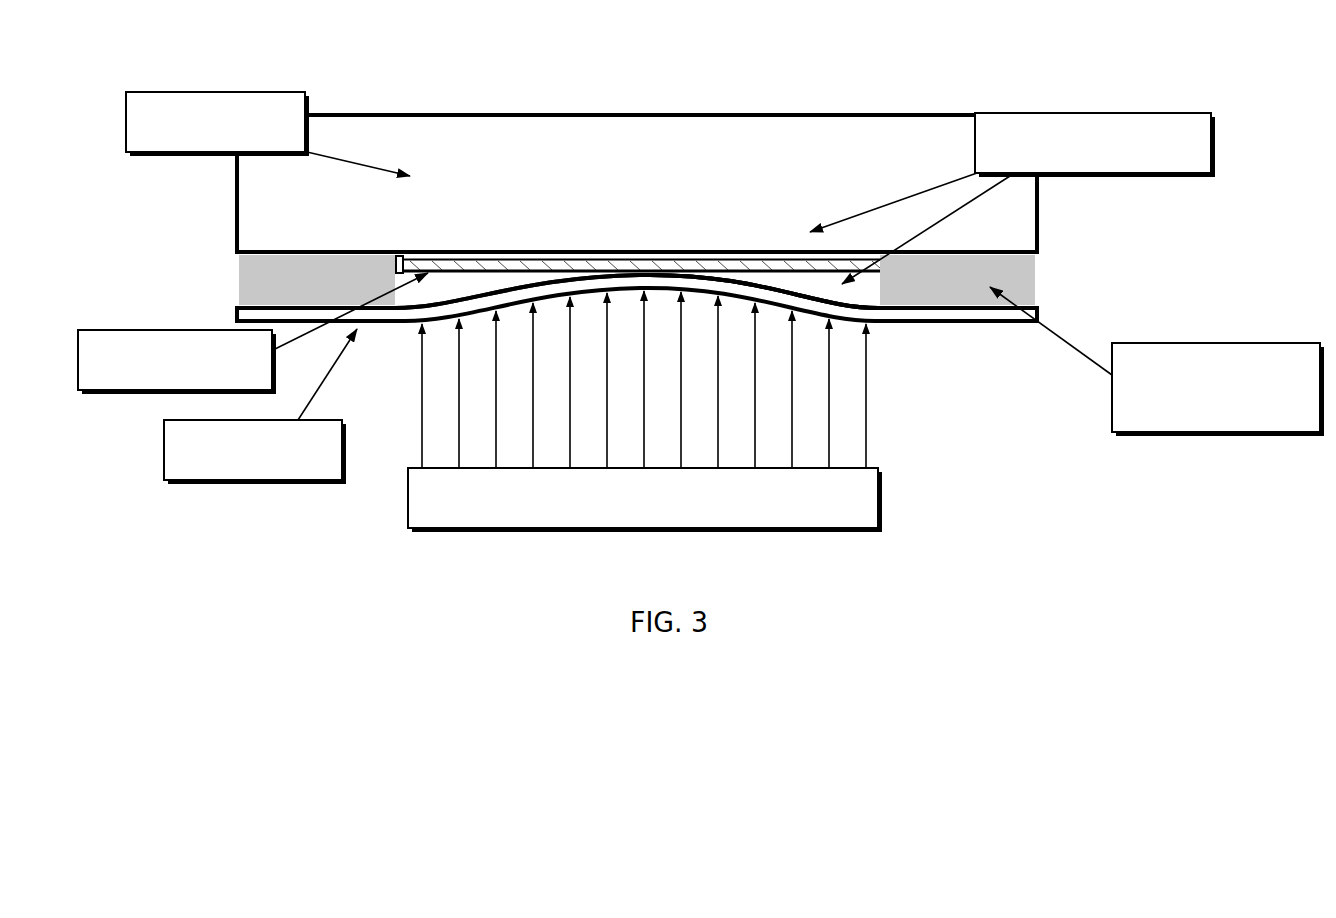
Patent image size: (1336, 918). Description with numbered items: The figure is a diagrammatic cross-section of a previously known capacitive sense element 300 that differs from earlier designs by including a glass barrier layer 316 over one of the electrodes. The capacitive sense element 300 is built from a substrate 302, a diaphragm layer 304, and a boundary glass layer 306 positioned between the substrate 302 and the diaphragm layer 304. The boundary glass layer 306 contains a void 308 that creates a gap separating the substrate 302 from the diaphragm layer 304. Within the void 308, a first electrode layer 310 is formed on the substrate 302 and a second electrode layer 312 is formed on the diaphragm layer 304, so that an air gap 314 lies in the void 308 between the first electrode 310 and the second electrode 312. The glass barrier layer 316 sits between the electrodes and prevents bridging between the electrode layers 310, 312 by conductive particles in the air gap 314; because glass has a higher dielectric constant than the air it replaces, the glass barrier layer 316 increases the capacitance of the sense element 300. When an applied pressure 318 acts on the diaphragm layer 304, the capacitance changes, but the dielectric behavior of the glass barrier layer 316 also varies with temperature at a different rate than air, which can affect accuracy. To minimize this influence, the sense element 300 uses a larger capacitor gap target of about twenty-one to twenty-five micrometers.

The capacitive sense element 300 is at (701, 270).
The substrate 302 is at (411, 129).
The diaphragm layer 304 is at (408, 317).
The boundary glass layer 306 is at (1036, 283).
The void 308 is at (769, 282).
The first electrode layer 310 is at (446, 259).
The second electrode layer 312 is at (694, 277).
The air gap 314 is at (541, 270).
The glass barrier layer 316 is at (481, 262).
The applied pressure 318 is at (880, 500).